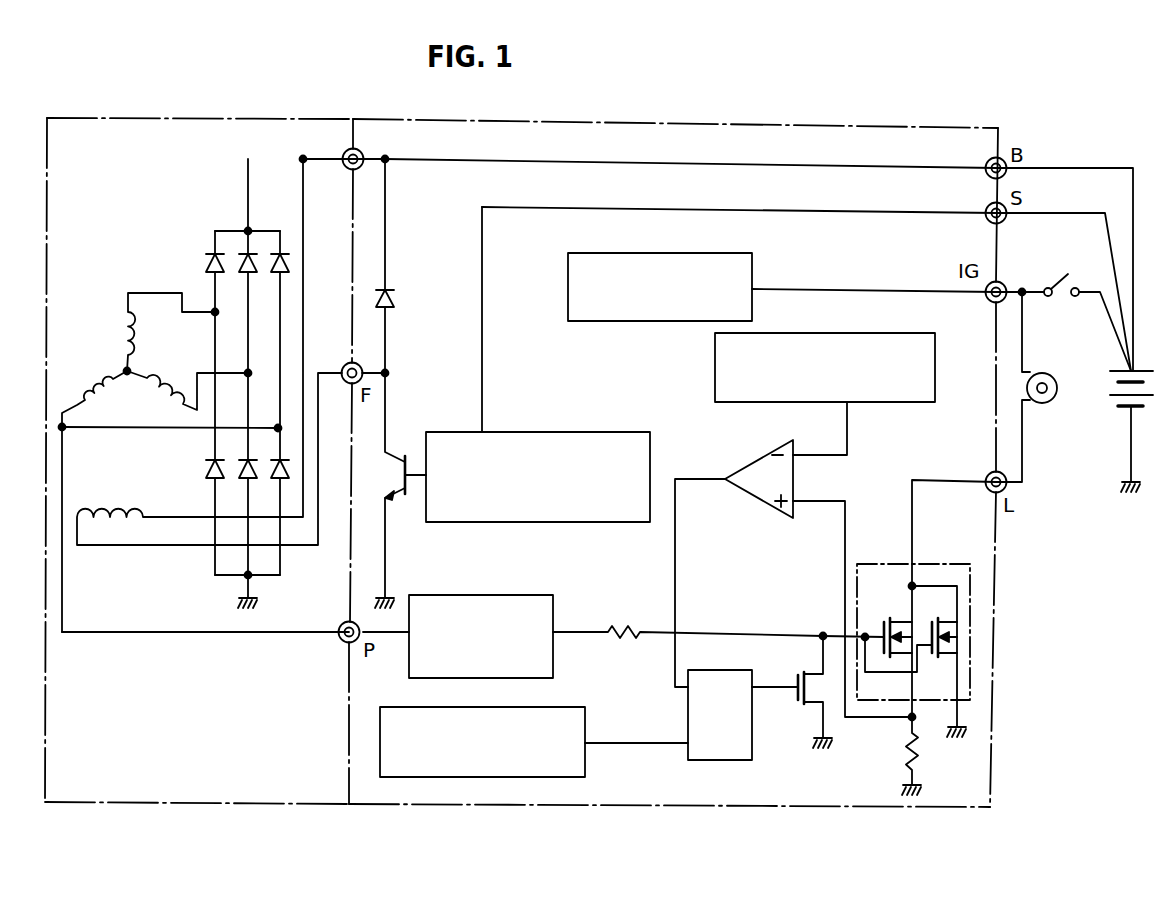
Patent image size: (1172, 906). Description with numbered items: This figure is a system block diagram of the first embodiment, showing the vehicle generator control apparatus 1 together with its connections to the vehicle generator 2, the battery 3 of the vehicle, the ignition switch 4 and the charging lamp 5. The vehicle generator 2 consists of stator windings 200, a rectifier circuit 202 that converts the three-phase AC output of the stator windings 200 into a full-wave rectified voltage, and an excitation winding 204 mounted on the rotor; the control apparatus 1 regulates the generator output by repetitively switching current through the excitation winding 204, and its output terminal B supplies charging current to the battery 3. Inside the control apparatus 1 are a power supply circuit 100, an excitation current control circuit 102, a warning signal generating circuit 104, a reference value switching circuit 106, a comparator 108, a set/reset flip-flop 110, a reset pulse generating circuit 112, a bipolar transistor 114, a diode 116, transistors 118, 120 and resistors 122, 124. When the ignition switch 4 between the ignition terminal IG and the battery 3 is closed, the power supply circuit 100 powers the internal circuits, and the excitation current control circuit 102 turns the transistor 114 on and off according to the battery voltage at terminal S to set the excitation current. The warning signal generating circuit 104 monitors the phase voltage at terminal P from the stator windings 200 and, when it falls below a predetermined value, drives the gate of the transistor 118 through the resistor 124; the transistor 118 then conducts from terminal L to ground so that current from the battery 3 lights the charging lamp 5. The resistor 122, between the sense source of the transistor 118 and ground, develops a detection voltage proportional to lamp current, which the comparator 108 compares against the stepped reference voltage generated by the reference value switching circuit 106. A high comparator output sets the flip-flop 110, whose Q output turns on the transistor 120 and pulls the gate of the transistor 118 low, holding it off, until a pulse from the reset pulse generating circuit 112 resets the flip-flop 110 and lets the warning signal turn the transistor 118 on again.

The vehicle generator control apparatus 1 is at (968, 128).
The vehicle generator 2 is at (318, 118).
The battery 3 is at (1133, 367).
The ignition switch 4 is at (1060, 278).
The charging lamp 5 is at (1050, 375).
The power supply circuit 100 is at (750, 253).
The excitation current control circuit 102 is at (545, 418).
The warning signal generating circuit 104 is at (543, 578).
The reference value switching circuit 106 is at (925, 318).
The comparator 108 is at (752, 460).
The set/reset type flip-flop 110 is at (750, 775).
The reset pulse generating circuit 112 is at (580, 693).
The bipolar transistor 114 is at (392, 452).
The diode 116 is at (390, 290).
The transistor 118 is at (955, 548).
The transistor 120 is at (800, 672).
The resistor 122 is at (905, 762).
The resistor 124 is at (613, 628).
The stator windings 200 is at (124, 364).
The rectifier circuit 202 is at (228, 231).
The excitation winding 204 is at (127, 504).